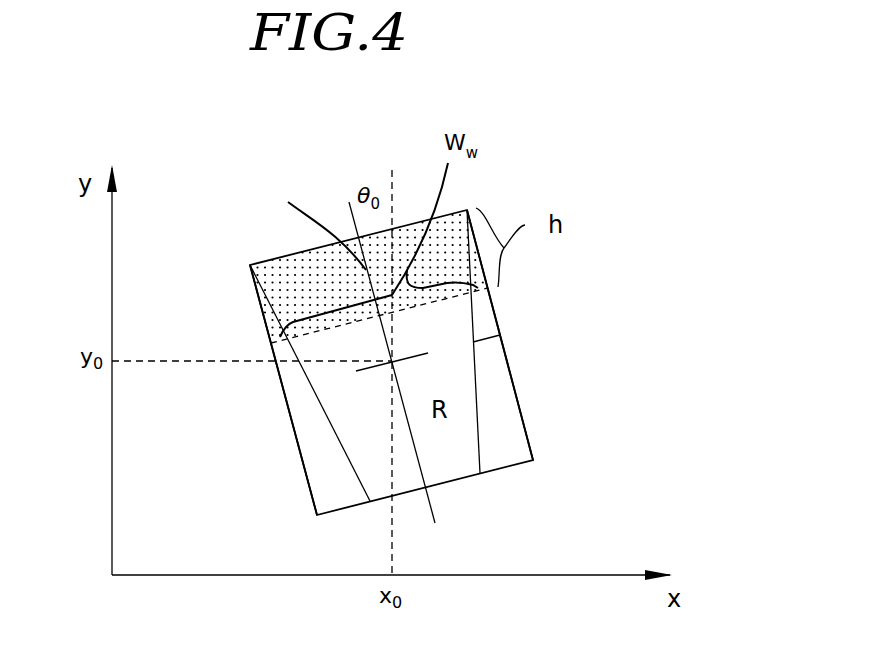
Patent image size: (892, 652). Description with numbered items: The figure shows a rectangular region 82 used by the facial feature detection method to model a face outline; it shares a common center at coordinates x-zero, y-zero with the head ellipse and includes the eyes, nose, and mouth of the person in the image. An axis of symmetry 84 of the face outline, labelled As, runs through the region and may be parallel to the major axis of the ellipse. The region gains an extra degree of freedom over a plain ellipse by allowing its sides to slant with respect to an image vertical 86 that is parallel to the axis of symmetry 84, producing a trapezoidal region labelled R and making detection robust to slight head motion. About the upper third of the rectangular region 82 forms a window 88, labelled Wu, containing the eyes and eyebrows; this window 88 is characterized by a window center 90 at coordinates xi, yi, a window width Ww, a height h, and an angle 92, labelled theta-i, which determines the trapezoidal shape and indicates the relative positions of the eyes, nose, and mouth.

The rectangular region 82 is at (517, 397).
The axis of symmetry 84 is at (489, 535).
The image vertical 86 is at (493, 318).
The window 88 is at (254, 320).
The window center 90 is at (268, 160).
The angle 92 is at (504, 450).